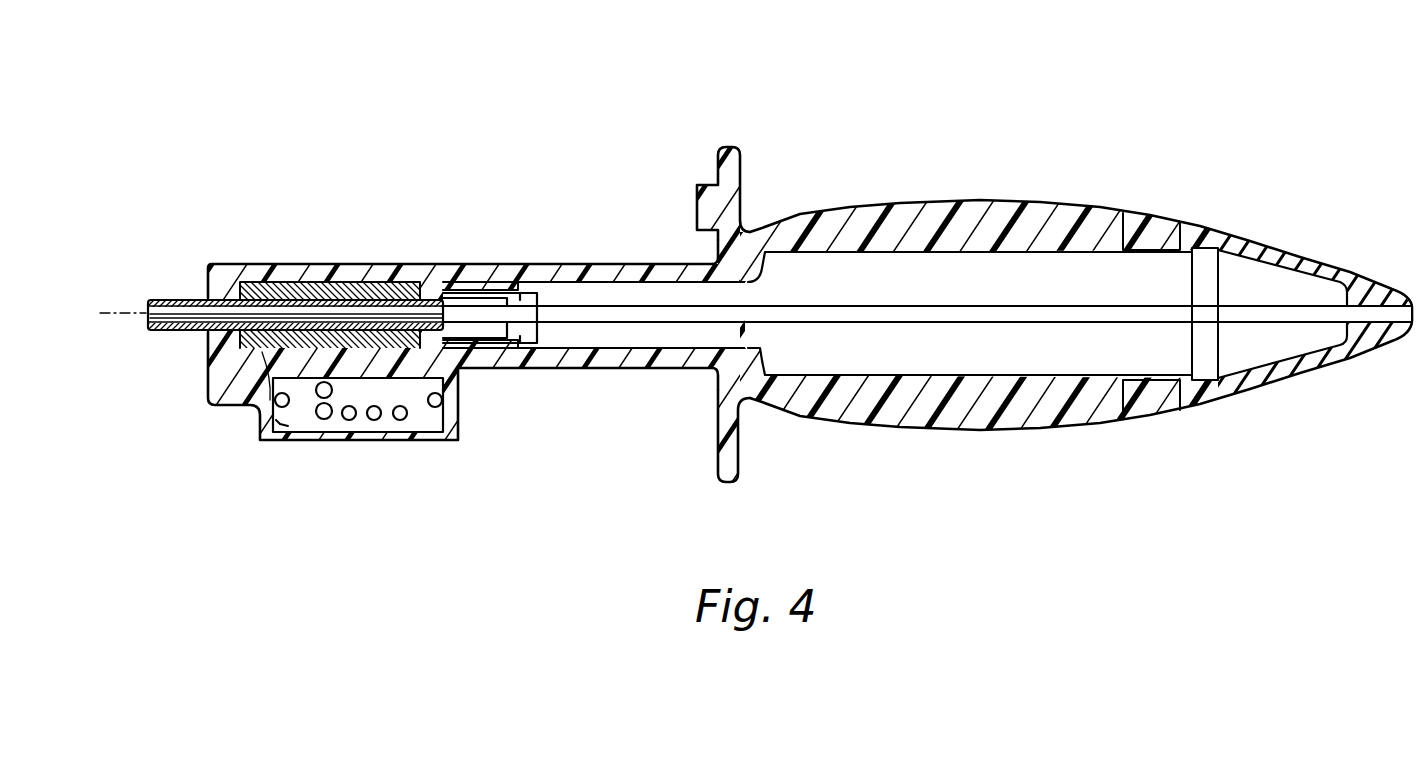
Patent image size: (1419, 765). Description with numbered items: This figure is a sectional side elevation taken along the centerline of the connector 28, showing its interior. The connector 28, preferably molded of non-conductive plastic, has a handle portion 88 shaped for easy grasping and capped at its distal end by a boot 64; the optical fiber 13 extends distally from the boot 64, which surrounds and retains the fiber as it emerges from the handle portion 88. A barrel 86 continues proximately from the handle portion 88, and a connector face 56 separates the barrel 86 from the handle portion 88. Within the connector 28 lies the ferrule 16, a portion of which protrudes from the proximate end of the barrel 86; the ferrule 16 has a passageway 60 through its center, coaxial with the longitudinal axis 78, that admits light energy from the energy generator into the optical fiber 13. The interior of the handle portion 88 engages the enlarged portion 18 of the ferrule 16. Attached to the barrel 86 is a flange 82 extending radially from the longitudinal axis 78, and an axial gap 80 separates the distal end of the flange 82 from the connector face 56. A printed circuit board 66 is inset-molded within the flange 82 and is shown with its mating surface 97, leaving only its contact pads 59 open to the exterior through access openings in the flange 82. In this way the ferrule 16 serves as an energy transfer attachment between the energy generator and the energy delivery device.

The optical fiber 13 is at (1305, 322).
The ferrule 16 is at (150, 333).
The enlarged portion 18 is at (240, 405).
The connector 28 is at (970, 134).
The connector face 56 is at (664, 446).
The contact pads 59 is at (398, 462).
The passageway 60 is at (140, 313).
The boot 64 is at (1300, 255).
The printed circuit board 66 is at (310, 432).
The longitudinal axis 78 is at (123, 313).
The axial gap 80 is at (576, 468).
The flange 82 is at (438, 443).
The barrel 86 is at (553, 263).
The handle portion 88 is at (1005, 493).
The mating surface 97 is at (280, 424).